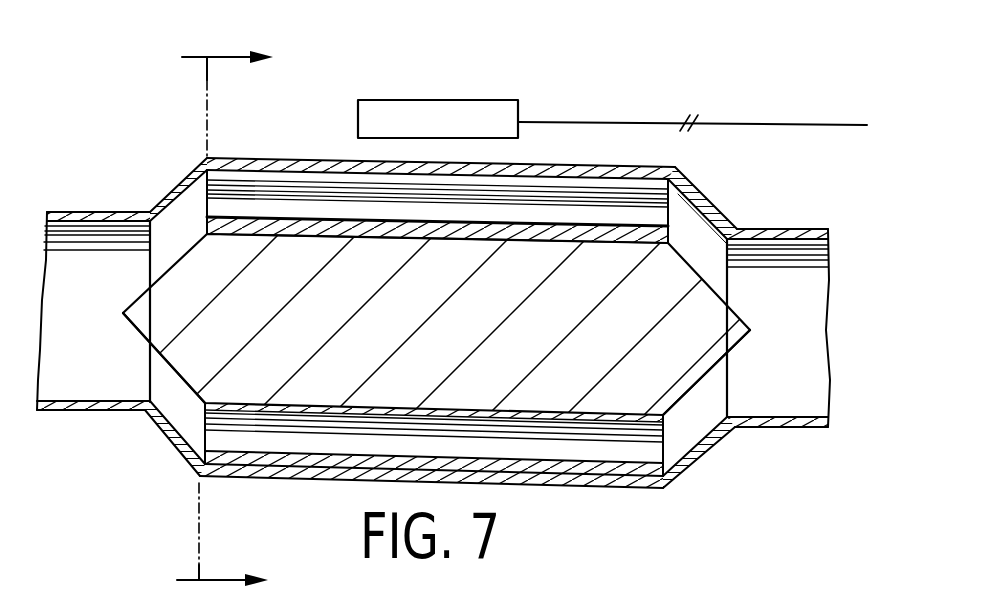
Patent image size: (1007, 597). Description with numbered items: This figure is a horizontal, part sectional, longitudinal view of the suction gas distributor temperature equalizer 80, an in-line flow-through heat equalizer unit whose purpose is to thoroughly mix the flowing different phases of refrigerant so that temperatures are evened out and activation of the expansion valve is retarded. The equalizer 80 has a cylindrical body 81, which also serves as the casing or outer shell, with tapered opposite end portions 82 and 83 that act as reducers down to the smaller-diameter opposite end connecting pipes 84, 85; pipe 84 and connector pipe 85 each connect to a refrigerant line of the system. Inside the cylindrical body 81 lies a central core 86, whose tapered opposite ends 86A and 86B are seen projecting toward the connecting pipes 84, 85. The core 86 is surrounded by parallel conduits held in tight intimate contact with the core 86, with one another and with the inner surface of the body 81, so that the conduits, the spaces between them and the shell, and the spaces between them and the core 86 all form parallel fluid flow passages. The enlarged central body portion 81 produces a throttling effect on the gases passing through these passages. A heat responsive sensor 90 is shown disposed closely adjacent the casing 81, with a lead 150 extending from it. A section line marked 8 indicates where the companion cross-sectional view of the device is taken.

The section line 8- 8 is at (238, 320).
The suction gas distributor temperature equalizer 80 is at (482, 300).
The cylindrical body 81 is at (597, 488).
The tapered end portion 82 is at (181, 185).
The tapered end portion 83 is at (708, 202).
The connecting pipe 84 is at (82, 412).
The connector pipe 85 is at (770, 428).
The central core 86 is at (505, 285).
The tapered end of core 86A is at (165, 421).
The tapered end of core 86B is at (728, 304).
The heat responsive sensor 90 is at (486, 97).
The sensor lead 150 is at (786, 125).